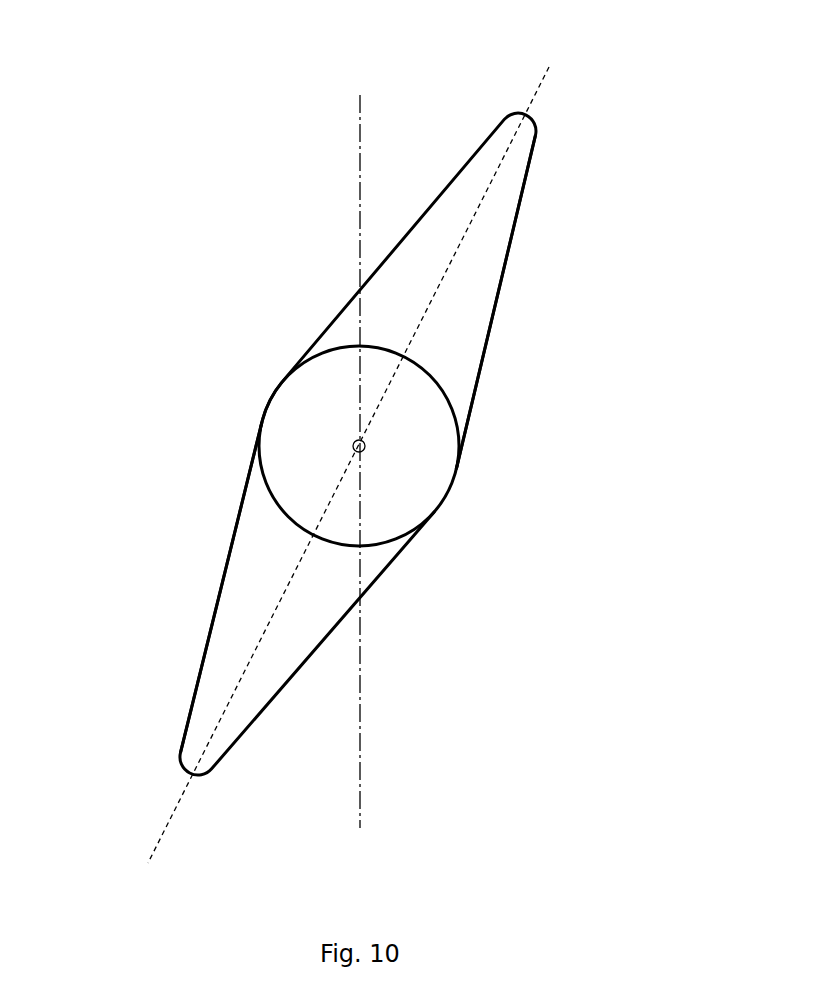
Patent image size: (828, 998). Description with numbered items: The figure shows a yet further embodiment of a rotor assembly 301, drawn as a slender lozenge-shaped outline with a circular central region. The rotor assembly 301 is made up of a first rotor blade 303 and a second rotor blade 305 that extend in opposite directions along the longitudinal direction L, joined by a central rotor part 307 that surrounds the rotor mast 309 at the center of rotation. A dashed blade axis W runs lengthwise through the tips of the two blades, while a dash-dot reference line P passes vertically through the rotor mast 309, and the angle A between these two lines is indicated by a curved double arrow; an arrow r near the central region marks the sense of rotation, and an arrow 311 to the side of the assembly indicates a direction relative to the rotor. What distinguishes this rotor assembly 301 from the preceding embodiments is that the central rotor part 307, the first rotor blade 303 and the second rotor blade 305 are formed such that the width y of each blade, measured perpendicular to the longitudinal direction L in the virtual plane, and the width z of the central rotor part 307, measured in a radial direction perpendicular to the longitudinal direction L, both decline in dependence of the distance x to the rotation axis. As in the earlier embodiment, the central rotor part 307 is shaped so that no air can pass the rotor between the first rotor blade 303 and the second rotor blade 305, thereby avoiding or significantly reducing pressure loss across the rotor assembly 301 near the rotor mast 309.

The rotor assembly 301 is at (185, 157).
The first rotor blade 303 is at (203, 662).
The second rotor blade 305 is at (493, 313).
The central rotor part 307 is at (260, 434).
The rotor mast 309 is at (365, 447).
The direction of flow 311 is at (562, 442).
The blade axis W is at (548, 67).
The reference plane axis P is at (362, 718).
The longitudinal direction L is at (685, 100).
The width of rotor blade y is at (432, 210).
The blade angle A is at (442, 280).
The distance to rotation axis x is at (359, 446).
The width of central rotor part z is at (359, 446).
The rotation direction r is at (217, 315).